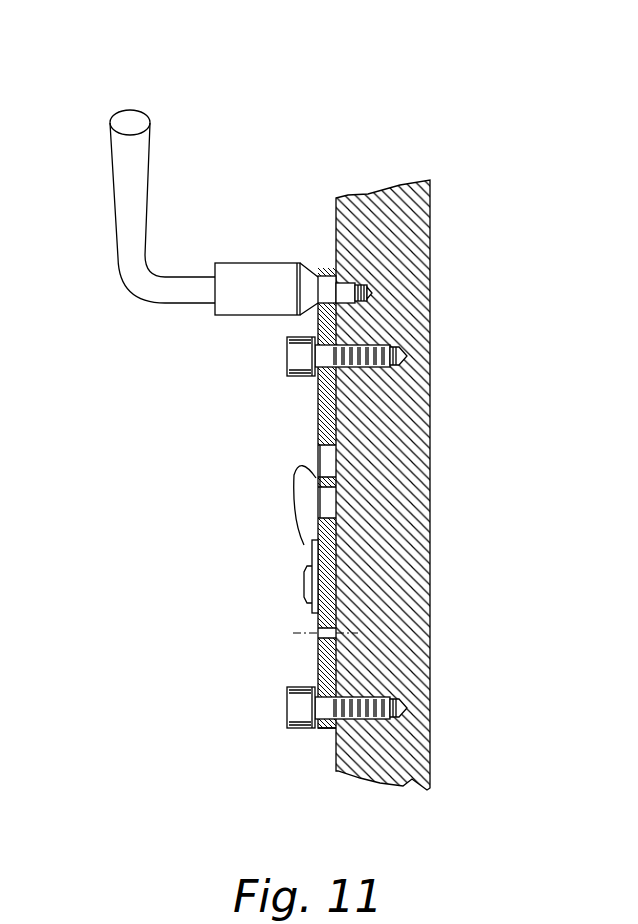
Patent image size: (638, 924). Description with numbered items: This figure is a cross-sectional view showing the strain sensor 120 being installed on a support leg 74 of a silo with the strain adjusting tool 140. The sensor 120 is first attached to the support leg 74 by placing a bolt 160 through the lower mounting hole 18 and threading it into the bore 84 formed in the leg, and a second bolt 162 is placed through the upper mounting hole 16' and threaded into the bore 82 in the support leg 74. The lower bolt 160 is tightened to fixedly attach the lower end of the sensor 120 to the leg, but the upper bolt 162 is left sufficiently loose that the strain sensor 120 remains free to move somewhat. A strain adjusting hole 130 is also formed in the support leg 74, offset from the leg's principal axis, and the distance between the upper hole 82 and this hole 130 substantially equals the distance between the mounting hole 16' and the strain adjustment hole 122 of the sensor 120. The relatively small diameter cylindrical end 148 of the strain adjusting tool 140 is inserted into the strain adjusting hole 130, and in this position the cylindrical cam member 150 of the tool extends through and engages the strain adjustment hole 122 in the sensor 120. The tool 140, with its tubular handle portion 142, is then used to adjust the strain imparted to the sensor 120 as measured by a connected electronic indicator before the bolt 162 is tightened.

The strain adjusting tool 140 is at (182, 163).
The tube 142 is at (123, 213).
The strain adjustment hole 122 is at (299, 288).
The cylindrical cam member 150 is at (338, 277).
The small diameter cylindrical end 148 is at (355, 284).
The strain adjusting hole 130 is at (366, 293).
The threaded hole 82 is at (360, 366).
The second bolt 162 is at (288, 353).
The upper mounting hole 16' is at (292, 498).
The support leg 74 is at (413, 498).
The strain sensor 120 is at (303, 587).
The threaded hole 84 is at (348, 706).
The bolt 160 is at (288, 705).
The lower mounting hole 18 is at (340, 733).